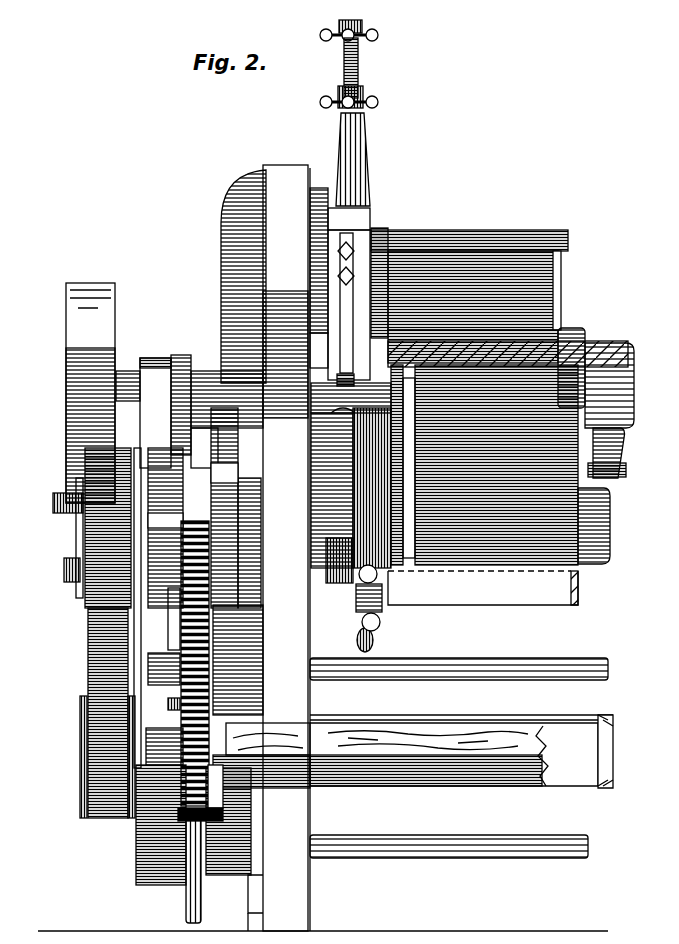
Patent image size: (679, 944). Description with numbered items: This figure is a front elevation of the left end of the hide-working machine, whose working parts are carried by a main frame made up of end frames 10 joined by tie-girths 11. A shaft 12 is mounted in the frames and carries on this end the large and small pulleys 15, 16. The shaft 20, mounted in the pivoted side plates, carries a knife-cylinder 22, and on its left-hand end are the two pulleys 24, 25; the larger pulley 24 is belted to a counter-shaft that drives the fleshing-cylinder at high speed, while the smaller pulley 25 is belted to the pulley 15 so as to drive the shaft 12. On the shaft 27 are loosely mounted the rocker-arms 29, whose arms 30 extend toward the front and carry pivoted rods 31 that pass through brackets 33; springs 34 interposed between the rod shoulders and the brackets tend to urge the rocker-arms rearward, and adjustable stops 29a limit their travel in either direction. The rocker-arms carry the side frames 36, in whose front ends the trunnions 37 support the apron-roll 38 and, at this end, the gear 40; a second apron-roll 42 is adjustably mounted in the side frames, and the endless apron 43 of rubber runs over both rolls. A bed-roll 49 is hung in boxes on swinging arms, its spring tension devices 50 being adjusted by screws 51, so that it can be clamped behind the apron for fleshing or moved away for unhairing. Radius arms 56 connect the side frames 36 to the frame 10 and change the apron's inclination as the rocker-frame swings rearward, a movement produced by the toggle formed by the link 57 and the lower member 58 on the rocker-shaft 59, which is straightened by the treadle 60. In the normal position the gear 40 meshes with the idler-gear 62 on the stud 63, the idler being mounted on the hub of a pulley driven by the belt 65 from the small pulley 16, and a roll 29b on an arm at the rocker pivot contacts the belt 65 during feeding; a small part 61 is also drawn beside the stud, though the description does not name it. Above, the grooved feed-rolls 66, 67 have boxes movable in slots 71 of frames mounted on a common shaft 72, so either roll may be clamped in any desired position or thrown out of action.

The end frame 10 is at (279, 548).
The tie-girth 11 is at (590, 745).
The shaft 12 is at (128, 805).
The large pulley 15 is at (130, 855).
The small pulley 16 is at (74, 795).
The shaft 20 is at (118, 363).
The knife-cylinder 22 is at (612, 372).
The pulley 24 is at (80, 278).
The pulley 25 is at (136, 352).
The shaft 27 is at (452, 655).
The rocker-arm 29 is at (238, 598).
The adjustable stop 29a is at (266, 640).
The roll 29b is at (80, 595).
The arm 30 is at (225, 530).
The rod 31 is at (188, 890).
The bracket 33 is at (240, 800).
The spring 34 is at (195, 705).
The side frame 36 is at (352, 604).
The trunnion 37 is at (200, 385).
The apron-roll 38 is at (612, 428).
The gear 40 is at (173, 348).
The second apron-roll 42 is at (588, 509).
The endless apron 43 is at (520, 545).
The bed-roll 49 is at (612, 462).
The spring tension device 50 is at (370, 570).
The screw 51 is at (372, 612).
The radius arm 56 is at (320, 582).
The link 57 is at (172, 695).
The toggle member 58 is at (232, 735).
The rocker-shaft 59 is at (430, 835).
The treadle 60 is at (386, 765).
The nut 61 is at (70, 540).
The idler-gear 62 is at (160, 518).
The stud 63 is at (50, 495).
The belt 65 is at (88, 640).
The feed-roll 66 is at (553, 268).
The feed-roll 67 is at (577, 296).
The slot 71 is at (355, 218).
The shaft 72 is at (505, 228).